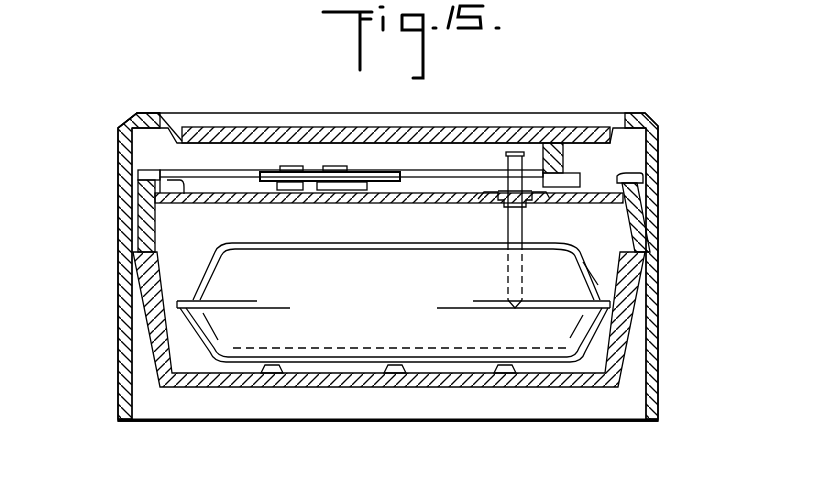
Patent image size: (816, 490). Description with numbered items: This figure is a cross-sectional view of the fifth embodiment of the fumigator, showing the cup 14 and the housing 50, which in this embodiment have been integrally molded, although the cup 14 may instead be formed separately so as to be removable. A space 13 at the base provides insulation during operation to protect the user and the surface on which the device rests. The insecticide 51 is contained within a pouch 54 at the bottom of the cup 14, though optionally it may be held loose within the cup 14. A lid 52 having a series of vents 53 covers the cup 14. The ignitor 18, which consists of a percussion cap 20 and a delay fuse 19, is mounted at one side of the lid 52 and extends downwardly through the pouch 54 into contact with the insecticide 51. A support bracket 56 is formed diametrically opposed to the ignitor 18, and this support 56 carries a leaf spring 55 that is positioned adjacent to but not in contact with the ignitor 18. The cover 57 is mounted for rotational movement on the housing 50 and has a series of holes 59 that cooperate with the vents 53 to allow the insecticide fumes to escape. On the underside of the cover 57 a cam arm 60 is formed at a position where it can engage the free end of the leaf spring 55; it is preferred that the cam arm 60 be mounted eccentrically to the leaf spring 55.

The space 13 is at (627, 412).
The cup 14 is at (627, 353).
The ignitor 18 is at (469, 230).
The delay fuse 19 is at (508, 224).
The percussion cap 20 is at (476, 199).
The housing 50 is at (652, 279).
The insecticide 51 is at (212, 328).
The lid 52 is at (137, 187).
The vents 53 is at (217, 204).
The pouch 54 is at (196, 272).
The leaf spring 55 is at (432, 177).
The support bracket 56 is at (291, 166).
The cover 57 is at (127, 122).
The holes 59 is at (204, 130).
The cam arm 60 is at (565, 162).